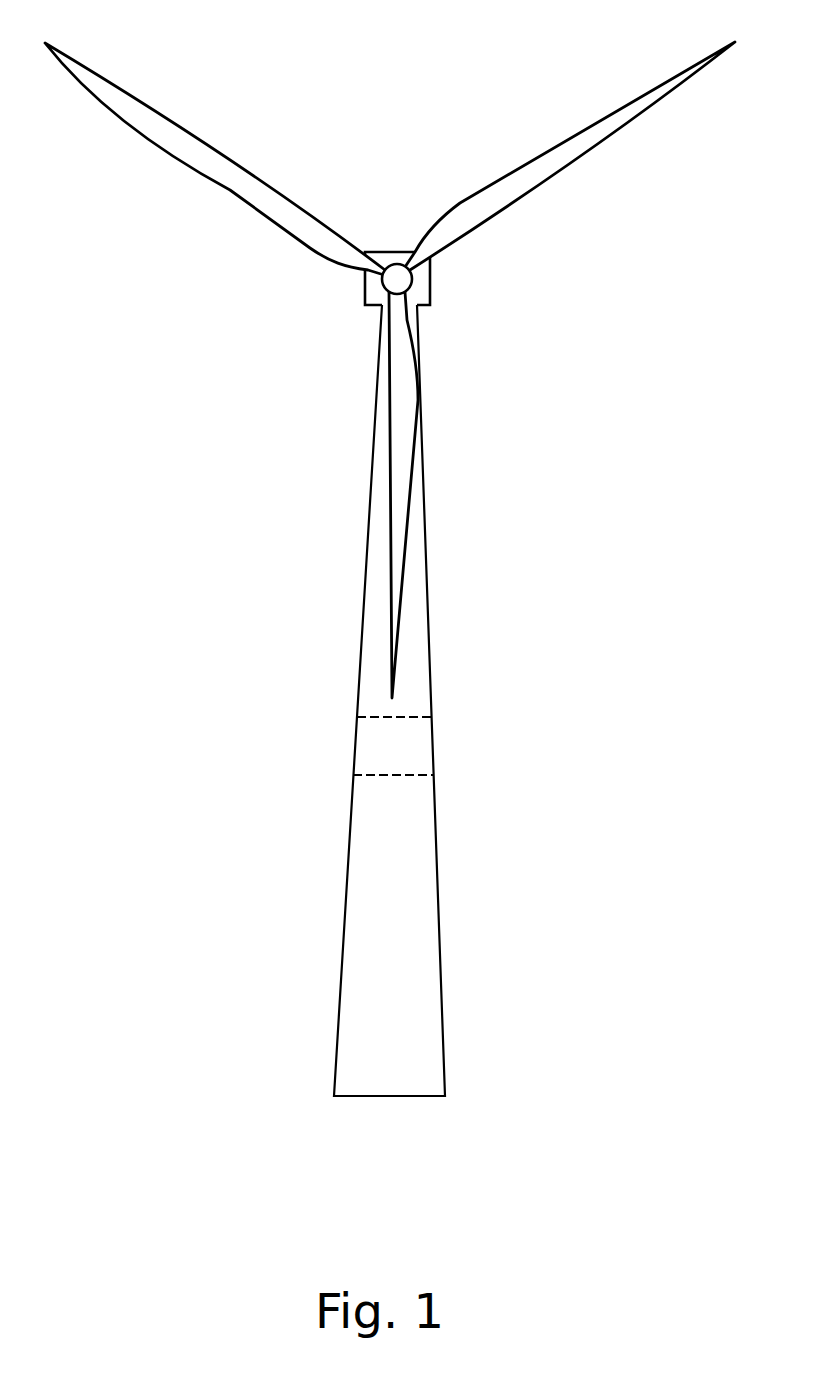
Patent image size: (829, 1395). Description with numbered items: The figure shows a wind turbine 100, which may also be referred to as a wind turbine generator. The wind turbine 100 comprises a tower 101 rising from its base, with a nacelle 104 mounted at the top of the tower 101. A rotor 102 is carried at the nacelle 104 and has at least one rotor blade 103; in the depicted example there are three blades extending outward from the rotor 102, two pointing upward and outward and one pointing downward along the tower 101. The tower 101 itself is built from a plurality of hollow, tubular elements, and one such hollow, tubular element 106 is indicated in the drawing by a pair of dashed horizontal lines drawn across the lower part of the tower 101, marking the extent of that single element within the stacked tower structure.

The wind turbine 100 is at (397, 554).
The tower 101 is at (383, 813).
The rotor 102 is at (388, 243).
The rotor blade 103 is at (637, 102).
The nacelle 104 is at (425, 293).
The hollow, tubular element 106 is at (410, 750).